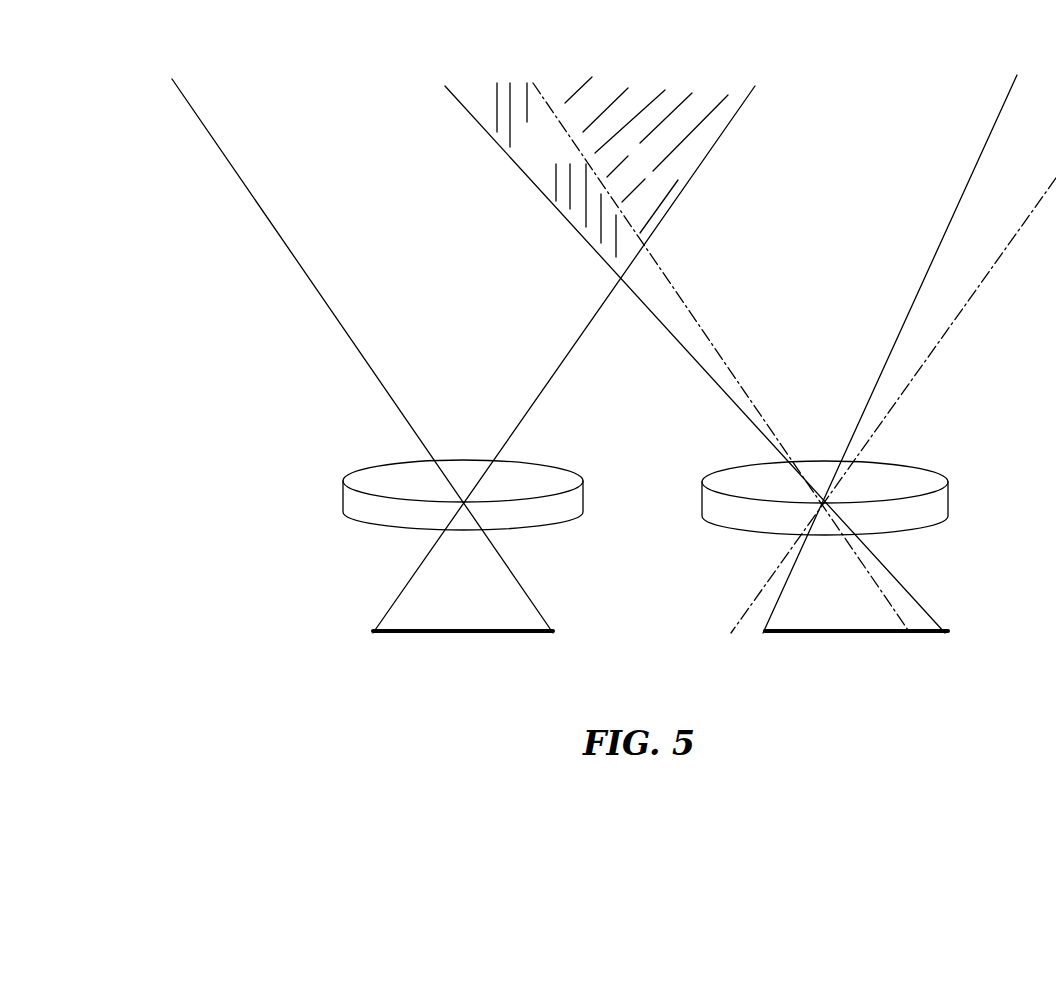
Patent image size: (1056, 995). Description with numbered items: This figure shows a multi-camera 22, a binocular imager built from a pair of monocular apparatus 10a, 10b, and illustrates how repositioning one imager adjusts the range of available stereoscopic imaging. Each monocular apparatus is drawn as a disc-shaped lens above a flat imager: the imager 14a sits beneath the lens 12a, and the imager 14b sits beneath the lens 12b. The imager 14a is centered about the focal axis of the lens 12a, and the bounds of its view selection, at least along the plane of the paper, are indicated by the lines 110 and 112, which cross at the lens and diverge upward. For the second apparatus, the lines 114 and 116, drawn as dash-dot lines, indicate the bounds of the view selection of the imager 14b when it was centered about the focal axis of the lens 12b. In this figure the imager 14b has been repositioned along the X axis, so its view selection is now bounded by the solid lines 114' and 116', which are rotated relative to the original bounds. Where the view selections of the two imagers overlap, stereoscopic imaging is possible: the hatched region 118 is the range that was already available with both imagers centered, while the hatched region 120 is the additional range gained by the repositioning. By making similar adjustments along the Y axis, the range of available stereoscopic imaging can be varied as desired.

The multi-camera 22 is at (236, 333).
The monocular apparatus 10a is at (398, 571).
The monocular apparatus 10b is at (776, 572).
The lens 12a is at (382, 526).
The lens 12b is at (738, 529).
The imager 14a is at (433, 635).
The imager 14b is at (790, 636).
The line 110 is at (377, 377).
The line 112 is at (552, 378).
The line 114 is at (721, 358).
The line 114' is at (695, 359).
The line 116 is at (893, 405).
The line 116' is at (890, 354).
The hatched region 118 is at (665, 169).
The hatched region 120 is at (562, 152).